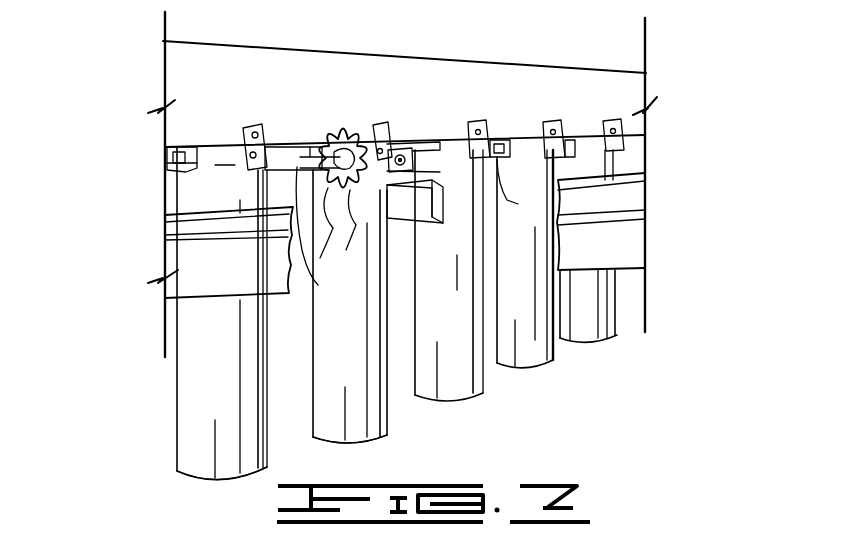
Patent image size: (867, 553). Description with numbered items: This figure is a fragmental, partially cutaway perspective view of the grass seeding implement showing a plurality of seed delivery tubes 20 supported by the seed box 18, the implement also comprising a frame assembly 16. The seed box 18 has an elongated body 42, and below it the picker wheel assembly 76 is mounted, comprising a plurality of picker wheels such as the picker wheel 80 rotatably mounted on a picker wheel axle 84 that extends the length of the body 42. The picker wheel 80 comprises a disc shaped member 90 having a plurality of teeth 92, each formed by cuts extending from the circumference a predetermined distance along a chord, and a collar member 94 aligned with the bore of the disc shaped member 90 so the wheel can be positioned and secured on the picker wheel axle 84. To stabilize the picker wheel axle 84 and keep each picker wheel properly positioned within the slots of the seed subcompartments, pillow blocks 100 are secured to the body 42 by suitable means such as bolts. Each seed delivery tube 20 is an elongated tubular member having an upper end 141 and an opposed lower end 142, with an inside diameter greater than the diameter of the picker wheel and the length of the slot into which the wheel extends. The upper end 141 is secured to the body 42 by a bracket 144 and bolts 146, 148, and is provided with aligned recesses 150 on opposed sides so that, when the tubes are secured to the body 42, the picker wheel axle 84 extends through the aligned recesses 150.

The frame assembly 16 is at (186, 260).
The seed box 18 is at (630, 90).
The seed delivery tubes 20 is at (178, 415).
The elongated body 42 is at (318, 53).
The picker wheel assembly 76 is at (322, 141).
The picker wheel 80 is at (352, 130).
The picker wheel axle 84 is at (419, 228).
The disc shaped member 90 is at (316, 248).
The teeth 92 is at (353, 220).
The collar member 94 is at (340, 128).
The pillow blocks 100 is at (413, 142).
The upper end 141 is at (217, 168).
The lower end 142 is at (197, 457).
The bracket 144 is at (397, 146).
The bolt 146 is at (386, 130).
The bolt 148 is at (405, 228).
The recesses 150 is at (189, 149).